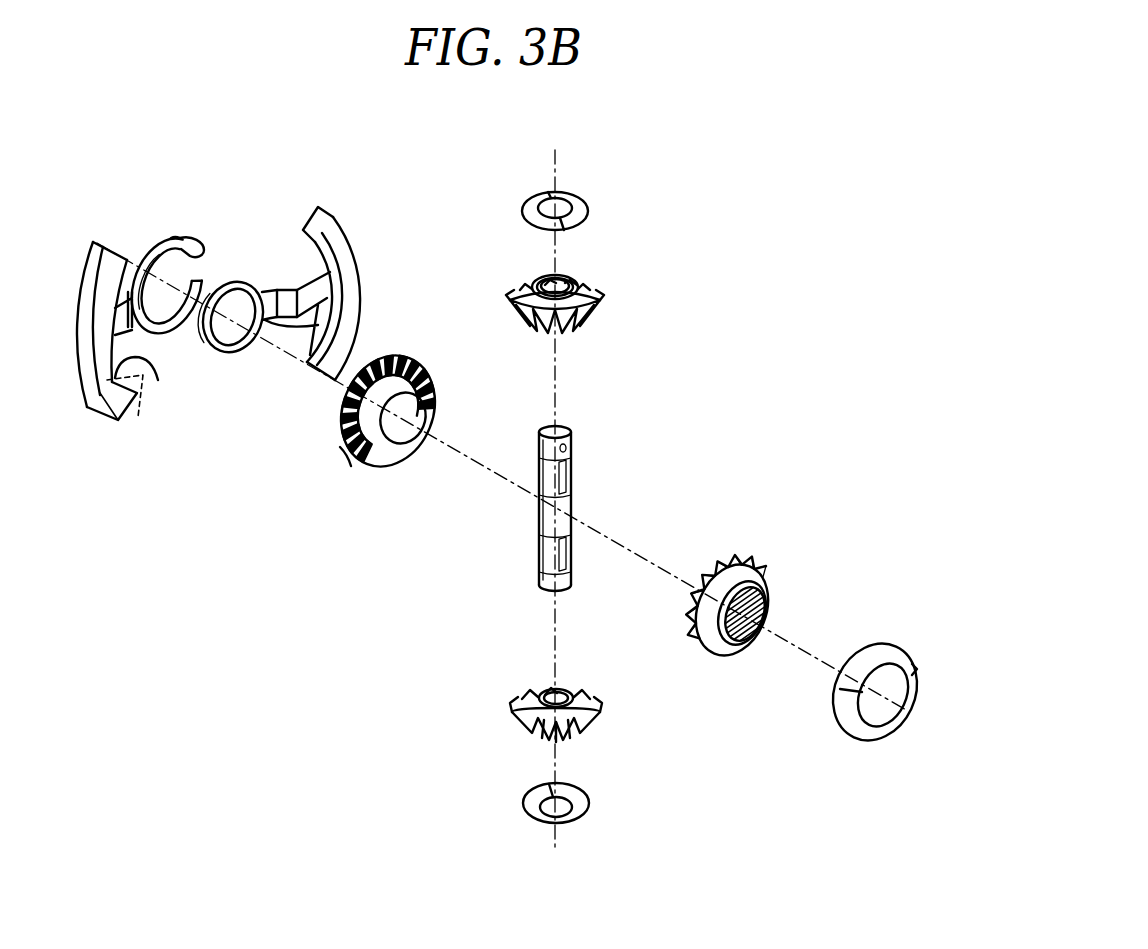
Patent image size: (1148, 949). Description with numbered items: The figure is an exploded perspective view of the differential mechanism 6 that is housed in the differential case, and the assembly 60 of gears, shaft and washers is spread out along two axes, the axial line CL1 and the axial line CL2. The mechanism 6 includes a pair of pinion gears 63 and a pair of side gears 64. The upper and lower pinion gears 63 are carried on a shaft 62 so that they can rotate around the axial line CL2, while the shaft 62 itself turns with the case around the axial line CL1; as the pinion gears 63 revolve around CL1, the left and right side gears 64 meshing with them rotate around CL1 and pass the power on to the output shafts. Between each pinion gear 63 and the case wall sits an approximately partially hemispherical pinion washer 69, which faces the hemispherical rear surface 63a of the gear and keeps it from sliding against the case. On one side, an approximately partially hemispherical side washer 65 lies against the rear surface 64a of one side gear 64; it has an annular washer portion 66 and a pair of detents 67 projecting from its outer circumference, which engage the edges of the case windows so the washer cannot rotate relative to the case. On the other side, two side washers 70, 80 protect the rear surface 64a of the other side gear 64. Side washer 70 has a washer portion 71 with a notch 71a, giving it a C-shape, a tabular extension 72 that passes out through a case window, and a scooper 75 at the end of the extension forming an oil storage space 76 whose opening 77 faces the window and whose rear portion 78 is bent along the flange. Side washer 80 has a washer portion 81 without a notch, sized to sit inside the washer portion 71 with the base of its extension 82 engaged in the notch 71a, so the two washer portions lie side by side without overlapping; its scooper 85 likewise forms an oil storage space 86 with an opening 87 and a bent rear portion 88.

The differential mechanism 6 is at (780, 353).
The differential mechanism 60 is at (783, 209).
The shaft 62 is at (573, 458).
The pinion gear 63 is at (597, 288).
The rear surface of pinion gear 63a is at (545, 290).
The side gear 64 is at (430, 392).
The rear surface of side gear 64a is at (355, 400).
The side washer 65 is at (872, 645).
The washer portion 66 is at (857, 733).
The detent 67 is at (840, 718).
The pinion washer 69 is at (585, 216).
The side washer 70 is at (98, 243).
The washer portion 71 is at (172, 240).
The notch 71a is at (198, 250).
The extension 72 is at (165, 340).
The scooper 75 is at (87, 408).
The oil storage space 76 is at (138, 420).
The opening 77 is at (158, 380).
The rear portion 78 is at (113, 300).
The side washer 80 is at (340, 215).
The washer portion 81 is at (242, 352).
The extension 82 is at (340, 318).
The scooper 85 is at (355, 328).
The oil storage space 86 is at (372, 250).
The opening 87 is at (318, 306).
The rear portion 88 is at (360, 236).
The axial line CL1 is at (517, 494).
The axial line CL2 is at (553, 486).